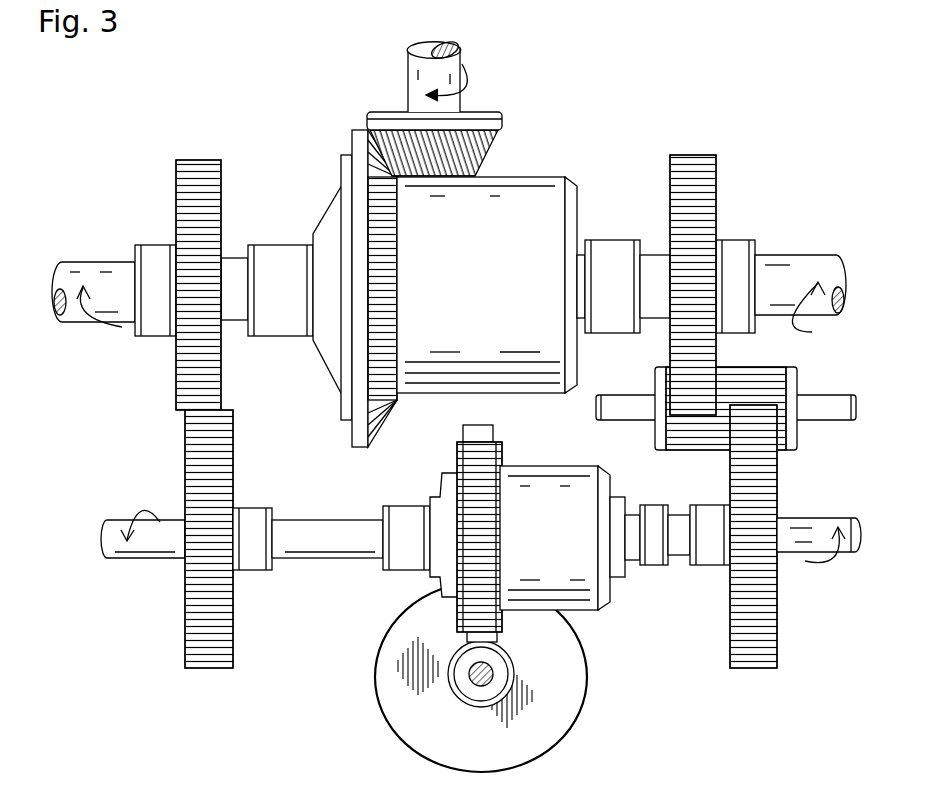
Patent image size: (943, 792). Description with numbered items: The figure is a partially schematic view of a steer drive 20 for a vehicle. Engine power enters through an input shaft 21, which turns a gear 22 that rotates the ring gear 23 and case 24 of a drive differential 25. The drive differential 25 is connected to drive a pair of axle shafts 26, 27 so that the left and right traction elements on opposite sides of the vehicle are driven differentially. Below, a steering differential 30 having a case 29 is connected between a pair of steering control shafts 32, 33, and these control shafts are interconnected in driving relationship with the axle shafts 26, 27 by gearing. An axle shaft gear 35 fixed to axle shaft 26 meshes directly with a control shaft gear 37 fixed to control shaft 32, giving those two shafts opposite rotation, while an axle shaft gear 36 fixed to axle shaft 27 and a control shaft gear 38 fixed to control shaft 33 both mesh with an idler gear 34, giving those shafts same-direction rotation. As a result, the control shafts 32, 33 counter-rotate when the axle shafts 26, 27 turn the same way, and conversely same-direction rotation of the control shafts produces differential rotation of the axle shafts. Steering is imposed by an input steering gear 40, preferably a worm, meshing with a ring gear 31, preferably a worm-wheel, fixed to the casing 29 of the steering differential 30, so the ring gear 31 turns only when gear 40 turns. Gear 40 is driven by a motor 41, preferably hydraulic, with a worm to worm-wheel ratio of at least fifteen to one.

The steer drive 20 is at (620, 74).
The shaft 21 is at (410, 62).
The gear 22 is at (498, 144).
The ring gear 23 is at (380, 430).
The case 24 is at (546, 178).
The drive differential 25 is at (556, 372).
The axle shaft 26 is at (92, 263).
The axle shaft 27 is at (790, 256).
The case 29 is at (540, 466).
The steering differential 30 is at (602, 596).
The ring gear 31 is at (480, 428).
The steering control shaft 32 is at (160, 556).
The steering control shaft 33 is at (794, 518).
The idler gear 34 is at (775, 369).
The axle shaft gear 35 is at (182, 160).
The axle shaft gear 36 is at (702, 156).
The control shaft gear 37 is at (236, 640).
The control shaft gear 38 is at (780, 634).
The input steering gear 40 is at (462, 690).
The motor 41 is at (590, 706).